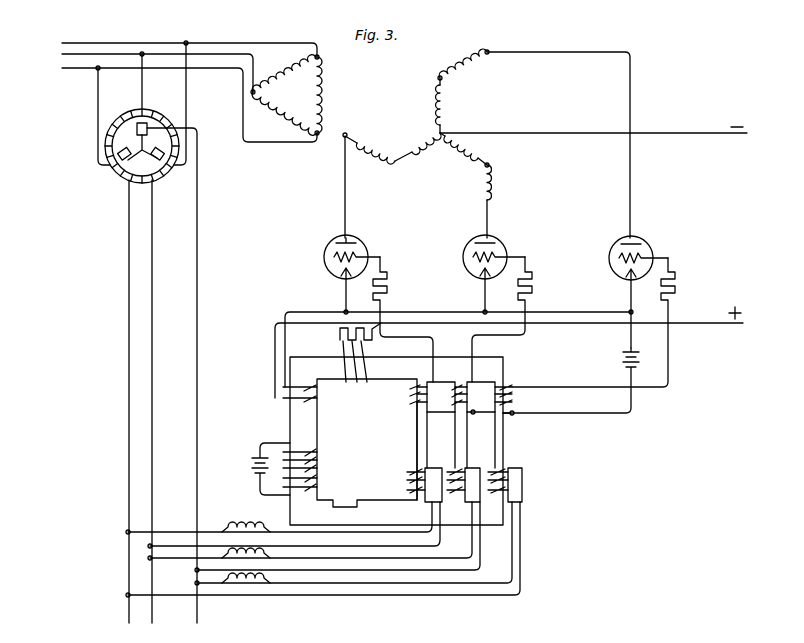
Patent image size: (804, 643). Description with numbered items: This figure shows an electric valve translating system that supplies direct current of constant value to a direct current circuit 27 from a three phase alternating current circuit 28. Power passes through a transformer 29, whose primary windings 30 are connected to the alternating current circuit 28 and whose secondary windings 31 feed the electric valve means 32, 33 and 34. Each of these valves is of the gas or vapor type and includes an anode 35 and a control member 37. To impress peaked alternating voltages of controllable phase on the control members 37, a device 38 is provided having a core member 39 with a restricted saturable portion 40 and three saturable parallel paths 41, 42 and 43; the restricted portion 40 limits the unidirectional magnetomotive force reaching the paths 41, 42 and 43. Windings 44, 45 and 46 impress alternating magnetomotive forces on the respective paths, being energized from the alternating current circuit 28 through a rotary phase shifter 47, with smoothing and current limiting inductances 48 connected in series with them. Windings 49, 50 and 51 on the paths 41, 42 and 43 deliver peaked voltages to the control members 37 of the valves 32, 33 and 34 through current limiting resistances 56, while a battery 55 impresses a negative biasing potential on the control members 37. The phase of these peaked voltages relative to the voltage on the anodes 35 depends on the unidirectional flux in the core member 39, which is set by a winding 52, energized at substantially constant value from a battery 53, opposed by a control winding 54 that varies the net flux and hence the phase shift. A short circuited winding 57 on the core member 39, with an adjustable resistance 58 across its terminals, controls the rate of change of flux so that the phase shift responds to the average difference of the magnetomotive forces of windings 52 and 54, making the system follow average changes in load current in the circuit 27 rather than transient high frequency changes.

The direct current circuit 27 is at (701, 134).
The three phase alternating current circuit 28 is at (88, 56).
The transformer 29 is at (386, 101).
The primary windings 30 is at (314, 90).
The secondary windings 31 is at (437, 114).
The electric valve means 32 is at (358, 248).
The electric valve means 33 is at (500, 248).
The electric valve means 34 is at (642, 248).
The anode 35 is at (336, 243).
The control member 37 is at (324, 258).
The device 38 is at (379, 443).
The core member 39 is at (290, 423).
The restricted saturable portion 40 is at (347, 506).
The saturable parallel path 41 is at (417, 438).
The saturable parallel path 42 is at (459, 438).
The saturable parallel path 43 is at (504, 438).
The winding 44 is at (408, 482).
The winding 45 is at (456, 468).
The winding 46 is at (512, 482).
The rotary phase shifter 47 is at (115, 174).
The smoothing and current limiting inductances 48 is at (245, 527).
The winding 49 is at (415, 392).
The winding 50 is at (452, 412).
The winding 51 is at (513, 396).
The winding 52 is at (318, 479).
The battery 53 is at (250, 467).
The control winding 54 is at (316, 397).
The battery 55 is at (621, 356).
The current limiting resistances 56 is at (388, 285).
The winding 57 is at (360, 384).
The adjustable resistance 58 is at (340, 334).